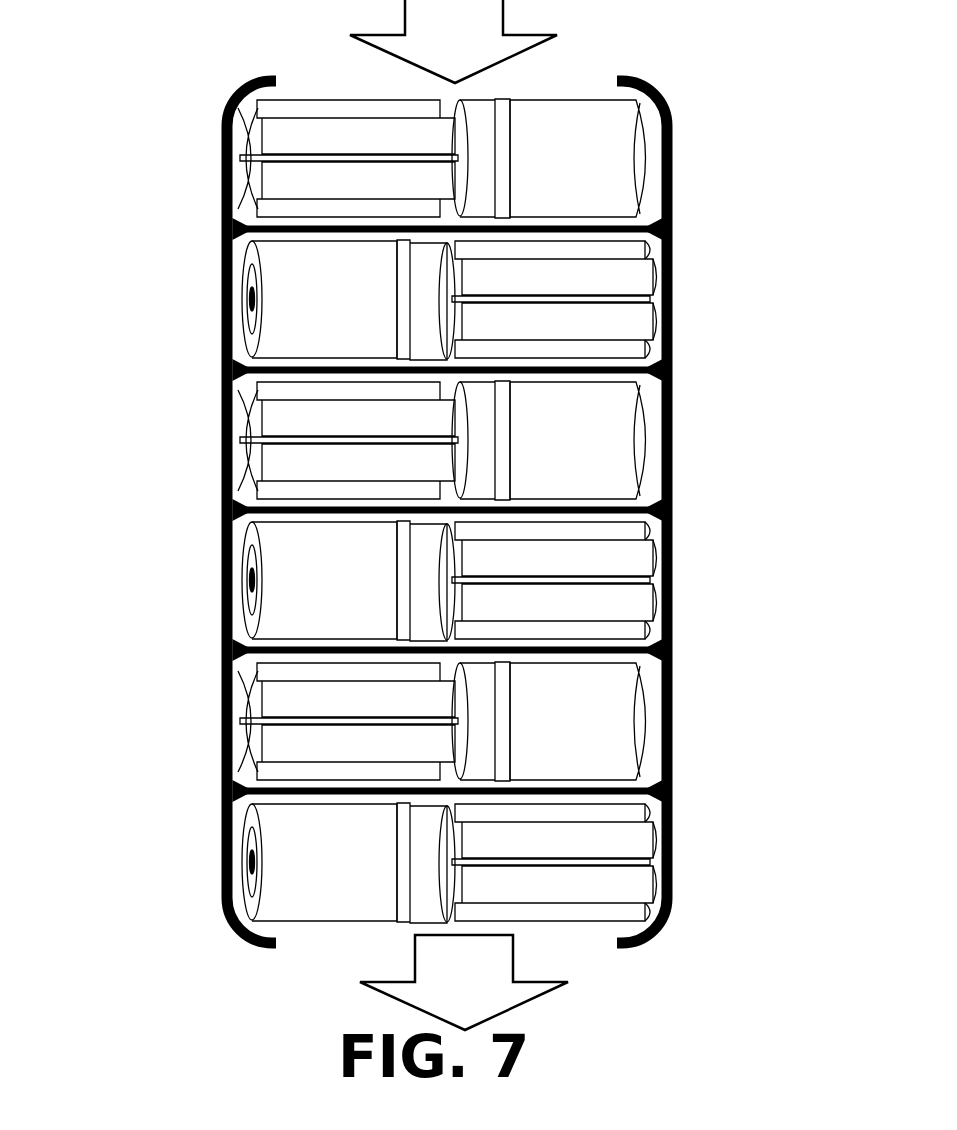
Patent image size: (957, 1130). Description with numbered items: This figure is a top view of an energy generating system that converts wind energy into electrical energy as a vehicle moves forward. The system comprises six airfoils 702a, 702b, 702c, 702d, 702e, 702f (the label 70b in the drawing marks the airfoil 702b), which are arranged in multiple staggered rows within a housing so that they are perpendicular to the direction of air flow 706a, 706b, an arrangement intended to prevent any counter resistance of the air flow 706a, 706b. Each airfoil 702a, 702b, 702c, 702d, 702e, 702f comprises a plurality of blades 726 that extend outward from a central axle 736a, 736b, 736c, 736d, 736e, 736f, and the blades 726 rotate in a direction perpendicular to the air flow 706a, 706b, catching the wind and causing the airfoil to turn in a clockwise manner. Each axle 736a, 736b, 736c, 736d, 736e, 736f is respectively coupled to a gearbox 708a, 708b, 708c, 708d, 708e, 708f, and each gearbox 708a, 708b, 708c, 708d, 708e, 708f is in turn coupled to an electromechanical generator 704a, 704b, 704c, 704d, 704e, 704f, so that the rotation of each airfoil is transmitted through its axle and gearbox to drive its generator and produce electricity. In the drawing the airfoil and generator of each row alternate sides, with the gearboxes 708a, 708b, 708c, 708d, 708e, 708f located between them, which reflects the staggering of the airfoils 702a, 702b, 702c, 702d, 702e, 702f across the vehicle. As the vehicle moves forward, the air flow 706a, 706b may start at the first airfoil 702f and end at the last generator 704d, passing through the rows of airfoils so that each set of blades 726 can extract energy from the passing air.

The blades 726 is at (265, 108).
The air flow 706a is at (453, 41).
The air flow 706b is at (464, 982).
The airfoil 702a is at (240, 147).
The airfoil 702b is at (280, 440).
The fan unit (702b) 70b is at (240, 416).
The airfoil 702c is at (240, 703).
The airfoil 702d is at (645, 290).
The airfoil 702e is at (643, 573).
The airfoil 702f is at (643, 843).
The electromechanical generator 704a is at (245, 302).
The electromechanical generator 704b is at (245, 579).
The electromechanical generator 704c is at (245, 858).
The electromechanical generator 704d is at (625, 146).
The electromechanical generator 704e is at (625, 448).
The electromechanical generator 704f is at (625, 728).
The gearbox 708a is at (425, 338).
The gearbox 708b is at (425, 610).
The gearbox 708c is at (425, 896).
The gearbox 708d is at (490, 122).
The gearbox 708e is at (470, 483).
The gearbox 708f is at (470, 755).
The axle 736a is at (240, 167).
The axle 736b is at (240, 447).
The axle 736c is at (240, 728).
The axle 736d is at (643, 322).
The axle 736e is at (643, 587).
The axle 736f is at (645, 862).